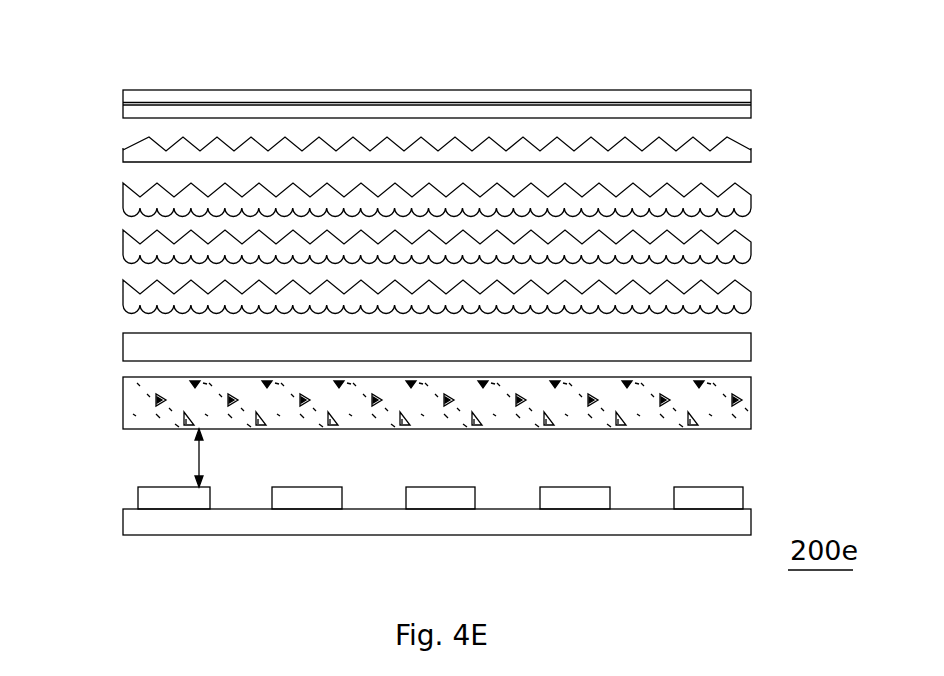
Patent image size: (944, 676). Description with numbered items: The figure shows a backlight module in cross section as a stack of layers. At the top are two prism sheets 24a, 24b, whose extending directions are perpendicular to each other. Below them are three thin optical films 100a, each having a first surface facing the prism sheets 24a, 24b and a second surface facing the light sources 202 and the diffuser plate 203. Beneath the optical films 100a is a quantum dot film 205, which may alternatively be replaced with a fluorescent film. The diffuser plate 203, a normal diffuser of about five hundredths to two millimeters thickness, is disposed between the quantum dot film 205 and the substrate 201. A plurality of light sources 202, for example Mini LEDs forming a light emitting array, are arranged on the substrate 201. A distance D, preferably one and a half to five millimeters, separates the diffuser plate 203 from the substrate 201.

The prism sheet 24a is at (230, 89).
The prism sheet 24b is at (122, 155).
The thin optical film 100a is at (122, 193).
The quantum dot film 205 is at (122, 344).
The diffuser plate 203 is at (122, 402).
The distance D is at (211, 458).
The light sources 202 is at (140, 490).
The substrate 201 is at (140, 536).